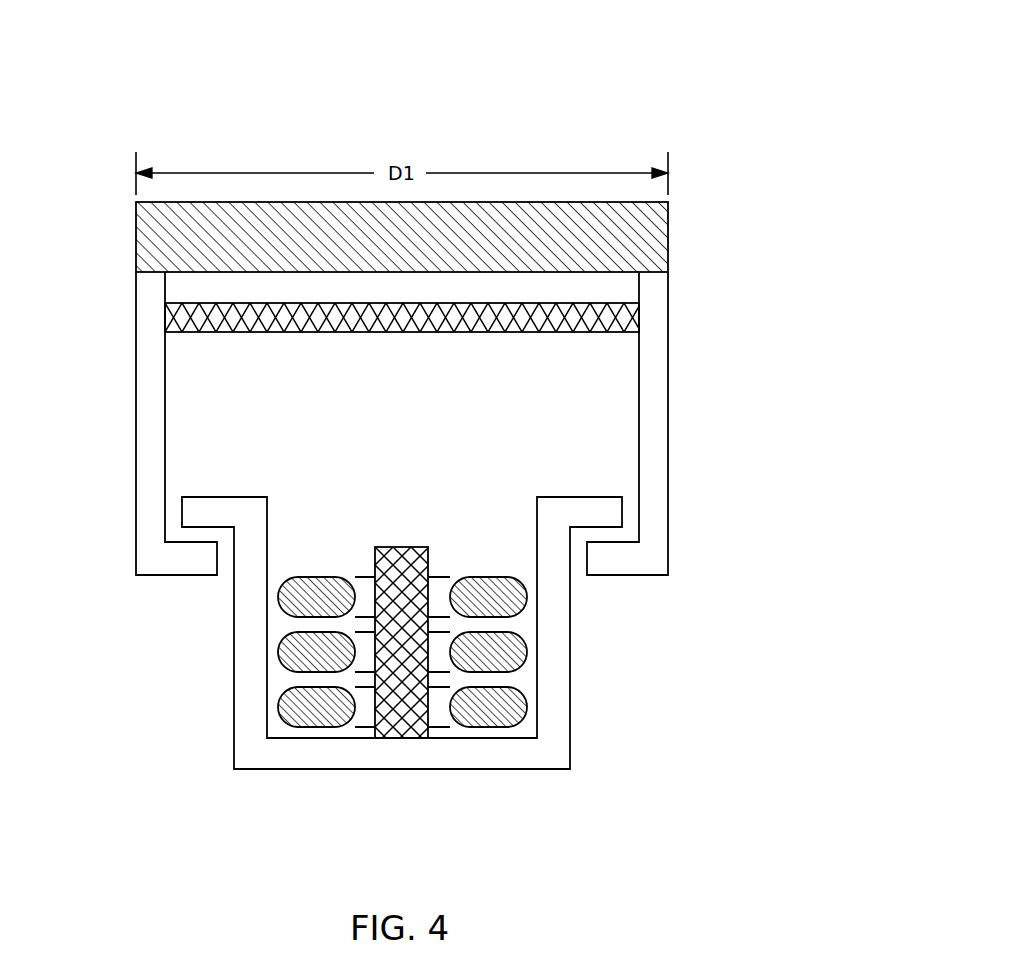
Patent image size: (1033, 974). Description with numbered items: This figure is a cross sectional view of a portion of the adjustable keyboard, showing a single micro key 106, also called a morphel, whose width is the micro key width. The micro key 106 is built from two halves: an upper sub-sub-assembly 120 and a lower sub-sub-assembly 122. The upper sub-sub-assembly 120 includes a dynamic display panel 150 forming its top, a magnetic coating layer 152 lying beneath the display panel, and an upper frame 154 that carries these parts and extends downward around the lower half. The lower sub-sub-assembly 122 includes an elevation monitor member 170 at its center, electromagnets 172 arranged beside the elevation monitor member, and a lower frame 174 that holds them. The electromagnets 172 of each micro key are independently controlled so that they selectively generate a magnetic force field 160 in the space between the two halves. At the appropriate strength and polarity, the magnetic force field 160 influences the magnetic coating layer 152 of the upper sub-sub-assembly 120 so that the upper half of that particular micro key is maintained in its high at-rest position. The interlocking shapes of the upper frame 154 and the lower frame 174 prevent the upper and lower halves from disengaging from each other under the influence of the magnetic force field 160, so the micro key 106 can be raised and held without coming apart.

The micro key sub-assembly 106 is at (705, 67).
The upper sub-sub-assembly 120 is at (705, 363).
The lower sub-sub-assembly 122 is at (207, 763).
The dynamic display panel 150 is at (668, 243).
The magnetic coating layer 152 is at (165, 322).
The upper frame 154 is at (136, 540).
The magnetic force field 160 is at (493, 462).
The elevation monitor member 170 is at (402, 738).
The electromagnets 172 is at (527, 597).
The lower frame 174 is at (234, 648).